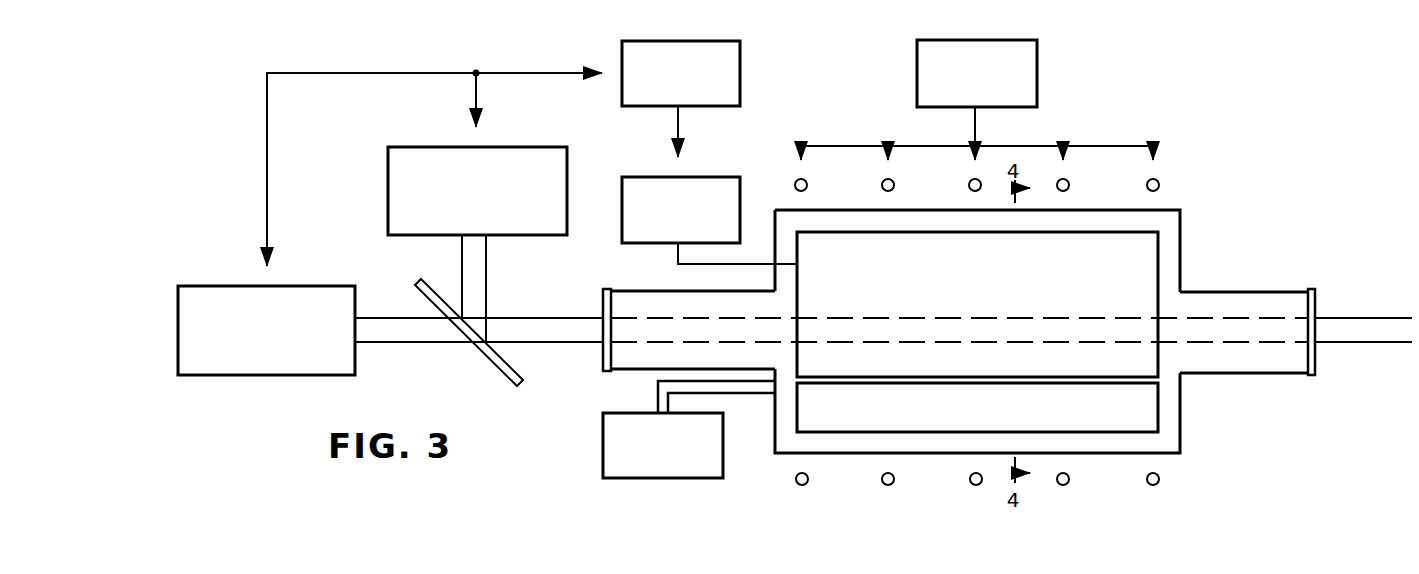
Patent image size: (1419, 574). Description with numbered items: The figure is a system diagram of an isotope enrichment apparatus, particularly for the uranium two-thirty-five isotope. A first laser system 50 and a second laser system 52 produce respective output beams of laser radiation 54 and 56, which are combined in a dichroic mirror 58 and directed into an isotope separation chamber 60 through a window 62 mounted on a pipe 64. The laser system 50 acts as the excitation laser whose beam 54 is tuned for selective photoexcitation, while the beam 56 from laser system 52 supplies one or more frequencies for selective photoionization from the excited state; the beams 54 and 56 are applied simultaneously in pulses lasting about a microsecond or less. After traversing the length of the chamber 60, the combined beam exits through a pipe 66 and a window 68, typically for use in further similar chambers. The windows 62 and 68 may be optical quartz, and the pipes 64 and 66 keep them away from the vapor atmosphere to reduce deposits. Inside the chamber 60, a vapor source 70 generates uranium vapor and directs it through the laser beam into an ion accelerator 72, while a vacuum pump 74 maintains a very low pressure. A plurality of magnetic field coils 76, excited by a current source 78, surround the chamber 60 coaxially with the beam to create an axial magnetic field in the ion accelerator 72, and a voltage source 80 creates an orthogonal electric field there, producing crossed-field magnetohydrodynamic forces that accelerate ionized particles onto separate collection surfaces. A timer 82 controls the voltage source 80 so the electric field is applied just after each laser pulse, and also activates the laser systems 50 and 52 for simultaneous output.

The first laser system 50 is at (210, 286).
The second laser system 52 is at (516, 147).
The laser radiation beam 54 is at (397, 342).
The laser beam 56 is at (460, 272).
The dichroic mirror 58 is at (504, 377).
The isotope separation chamber 60 is at (1198, 232).
The window 62 is at (603, 307).
The pipe 64 is at (625, 291).
The pipe 66 is at (1250, 291).
The window 68 is at (1312, 305).
The vapor source 70 is at (1133, 418).
The ion accelerator 72 is at (1082, 252).
The vacuum pump 74 is at (603, 433).
The magnetic field coils 76 is at (893, 185).
The current source 78 is at (1037, 66).
The voltage source 80 is at (722, 177).
The timer 82 is at (740, 58).